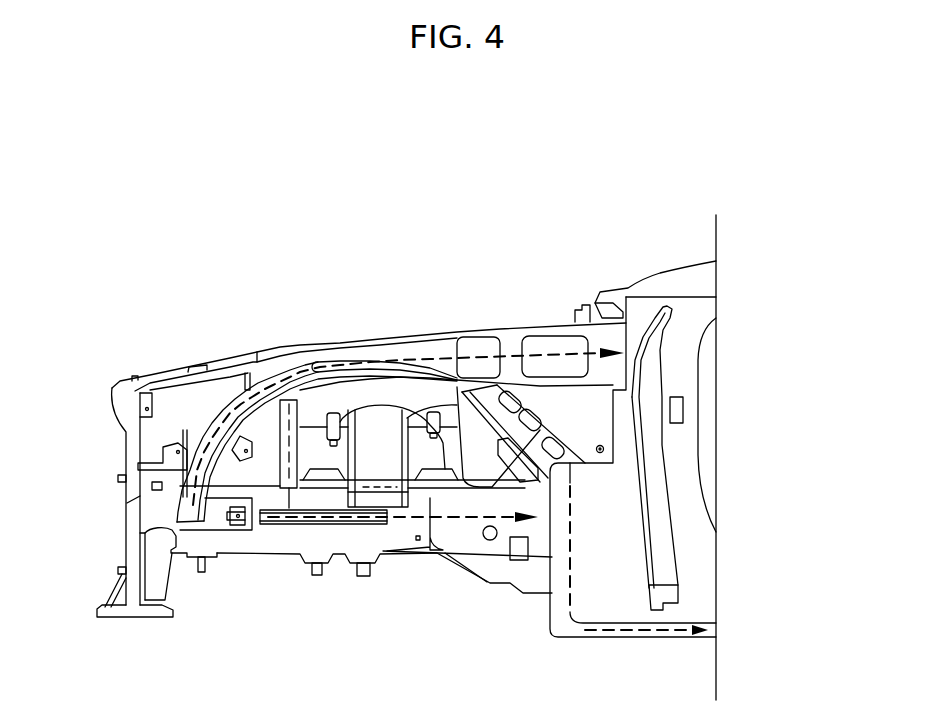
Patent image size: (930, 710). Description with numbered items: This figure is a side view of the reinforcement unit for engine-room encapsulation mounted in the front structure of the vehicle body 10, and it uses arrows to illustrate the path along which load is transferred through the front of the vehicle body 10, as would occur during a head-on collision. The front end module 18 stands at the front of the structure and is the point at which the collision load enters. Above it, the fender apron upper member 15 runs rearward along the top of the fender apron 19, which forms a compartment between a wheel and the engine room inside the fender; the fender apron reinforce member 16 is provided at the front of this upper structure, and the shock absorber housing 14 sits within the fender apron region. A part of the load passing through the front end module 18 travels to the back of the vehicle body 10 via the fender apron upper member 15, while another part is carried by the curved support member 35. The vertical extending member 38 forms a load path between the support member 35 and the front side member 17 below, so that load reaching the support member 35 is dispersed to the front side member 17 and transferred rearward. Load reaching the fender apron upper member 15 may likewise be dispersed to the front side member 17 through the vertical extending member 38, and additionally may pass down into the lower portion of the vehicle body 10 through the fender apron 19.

The vehicle body 10 is at (677, 310).
The shock absorber housing 14 is at (377, 458).
The fender apron upper member 15 is at (466, 354).
The fender apron reinforce member 16 is at (156, 481).
The front side member 17 is at (342, 540).
The front end module 18 is at (127, 401).
The fender apron 19 is at (508, 480).
The support member 35 is at (300, 356).
The vertical extending member 38 is at (286, 447).